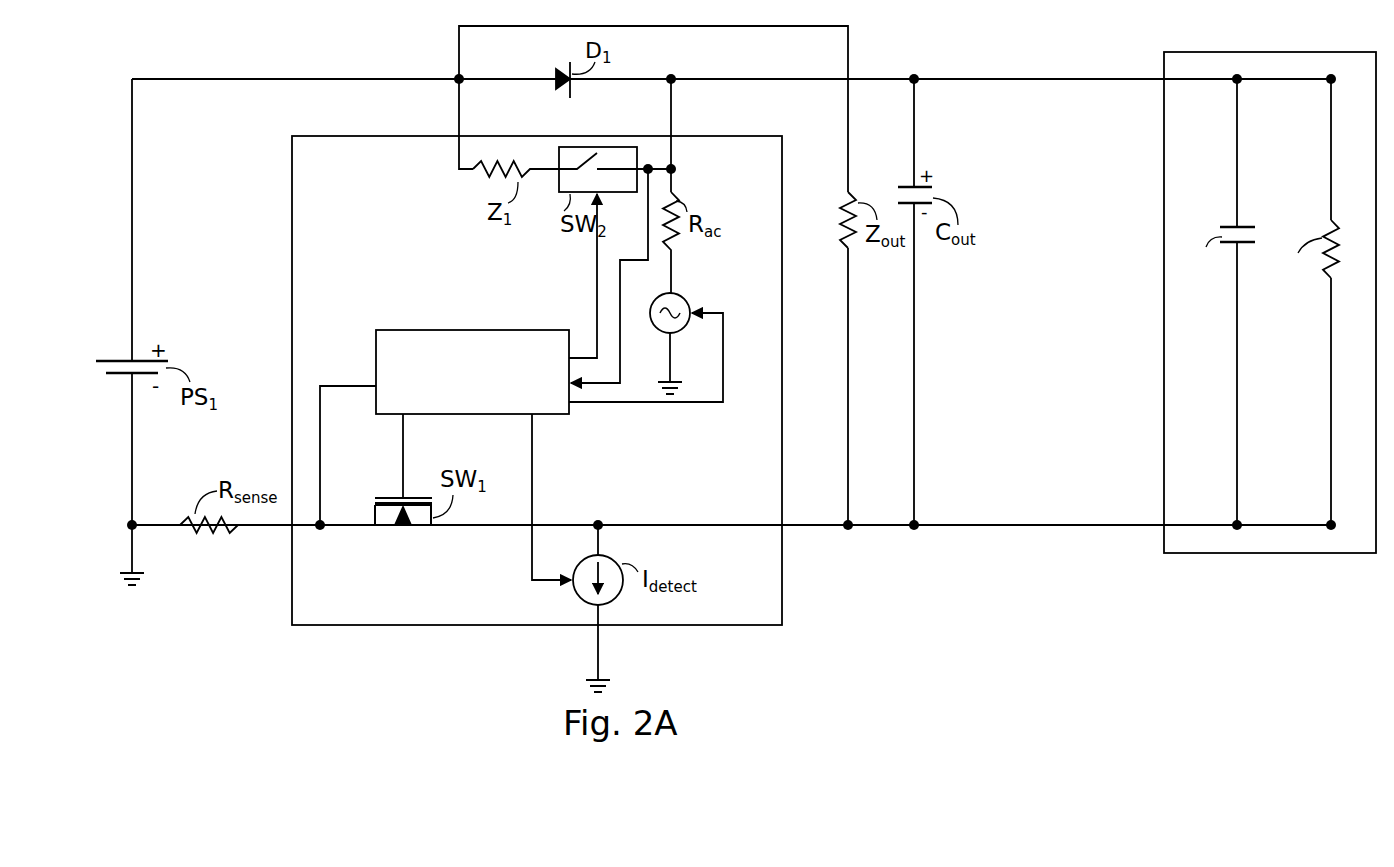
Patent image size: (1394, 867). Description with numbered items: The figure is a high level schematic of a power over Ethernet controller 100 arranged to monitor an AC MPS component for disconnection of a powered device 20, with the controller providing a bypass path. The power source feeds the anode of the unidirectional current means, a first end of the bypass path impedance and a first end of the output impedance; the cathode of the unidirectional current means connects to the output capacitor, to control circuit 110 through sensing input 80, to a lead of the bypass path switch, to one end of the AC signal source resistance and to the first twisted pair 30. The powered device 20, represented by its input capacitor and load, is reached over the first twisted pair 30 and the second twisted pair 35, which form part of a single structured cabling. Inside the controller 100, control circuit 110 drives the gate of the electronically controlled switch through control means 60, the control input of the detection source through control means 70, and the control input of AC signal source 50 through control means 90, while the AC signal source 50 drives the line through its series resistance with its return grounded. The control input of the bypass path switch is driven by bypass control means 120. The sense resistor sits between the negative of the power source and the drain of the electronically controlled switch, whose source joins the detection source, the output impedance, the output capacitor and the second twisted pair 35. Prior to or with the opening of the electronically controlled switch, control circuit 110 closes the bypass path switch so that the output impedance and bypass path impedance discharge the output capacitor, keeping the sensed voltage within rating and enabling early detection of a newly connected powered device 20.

The powered device 20 is at (1278, 553).
The first twisted pair 30 is at (995, 80).
The second twisted pair 35 is at (982, 524).
The AC signal source 50 is at (688, 296).
The control means 60 is at (403, 467).
The control means 70 is at (532, 489).
The sensing input 80 is at (647, 240).
The control means 90 is at (628, 403).
The power over Ethernet controller 100 is at (470, 625).
The control circuit 110 is at (455, 330).
The bypass control means 120 is at (597, 310).